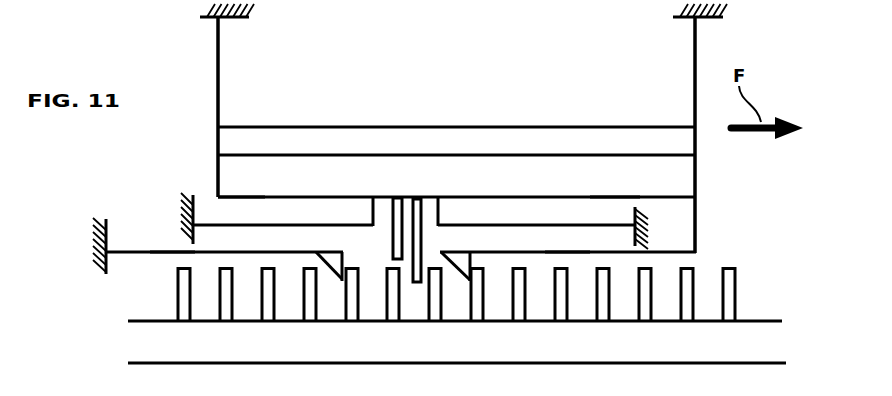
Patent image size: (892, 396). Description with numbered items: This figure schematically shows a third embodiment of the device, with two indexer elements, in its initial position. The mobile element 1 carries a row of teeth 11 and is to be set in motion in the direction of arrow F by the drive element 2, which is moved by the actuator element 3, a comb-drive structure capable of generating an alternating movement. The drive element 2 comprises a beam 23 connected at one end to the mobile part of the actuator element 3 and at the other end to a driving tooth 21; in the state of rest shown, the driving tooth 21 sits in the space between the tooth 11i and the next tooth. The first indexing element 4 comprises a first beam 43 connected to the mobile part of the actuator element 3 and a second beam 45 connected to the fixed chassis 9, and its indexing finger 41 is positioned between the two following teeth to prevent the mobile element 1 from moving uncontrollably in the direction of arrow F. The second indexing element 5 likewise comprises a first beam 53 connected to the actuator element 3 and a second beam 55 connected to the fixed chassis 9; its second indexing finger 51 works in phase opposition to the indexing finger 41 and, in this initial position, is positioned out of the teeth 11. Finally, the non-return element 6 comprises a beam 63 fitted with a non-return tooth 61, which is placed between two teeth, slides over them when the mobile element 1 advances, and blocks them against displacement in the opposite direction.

The mobile element 1 is at (762, 322).
The teeth 11 is at (728, 295).
The tooth i 11i is at (477, 296).
The drive element 2 is at (697, 227).
The driving tooth 21 is at (458, 253).
The beam 23 is at (567, 252).
The actuator element 3 is at (226, 141).
The indexing element 4 is at (431, 197).
The indexing finger 41 is at (411, 201).
The first beam 43 is at (603, 197).
The second beam 45 is at (595, 223).
The second indexing element 5 is at (291, 197).
The second indexing finger 51 is at (393, 230).
The first beam 53 is at (239, 197).
The second beam 55 is at (218, 224).
The non-return element 6 is at (131, 252).
The non-return tooth 61 is at (333, 256).
The beam 63 is at (171, 252).
The fixed chassis 9 is at (207, 18).